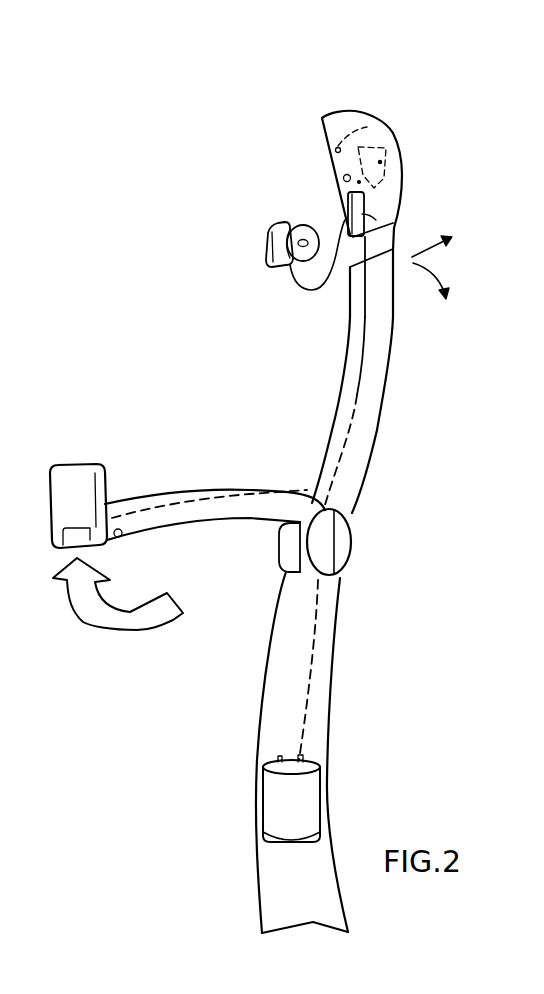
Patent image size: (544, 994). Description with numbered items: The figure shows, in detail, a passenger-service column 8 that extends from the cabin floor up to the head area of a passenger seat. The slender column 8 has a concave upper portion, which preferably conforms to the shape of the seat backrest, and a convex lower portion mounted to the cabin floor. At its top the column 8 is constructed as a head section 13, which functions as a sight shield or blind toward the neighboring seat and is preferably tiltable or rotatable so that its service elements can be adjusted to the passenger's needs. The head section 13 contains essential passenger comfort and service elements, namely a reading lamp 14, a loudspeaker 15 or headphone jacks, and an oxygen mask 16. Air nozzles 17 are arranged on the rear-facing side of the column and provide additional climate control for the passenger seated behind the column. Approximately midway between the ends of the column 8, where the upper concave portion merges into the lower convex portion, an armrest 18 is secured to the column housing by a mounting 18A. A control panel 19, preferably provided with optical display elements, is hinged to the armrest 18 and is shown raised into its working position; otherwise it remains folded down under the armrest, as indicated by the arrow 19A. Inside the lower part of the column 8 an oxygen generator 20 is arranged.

The column 8 is at (390, 422).
The head section 13 is at (322, 108).
The reading lamp 14 is at (396, 140).
The loudspeaker 15 is at (402, 167).
The oxygen mask 16 is at (311, 226).
The air nozzles 17 is at (394, 250).
The armrest 18 is at (178, 495).
The mounting 18A is at (343, 553).
The control panel 19 is at (75, 480).
The arrow 19A is at (93, 617).
The oxygen generator 20 is at (305, 797).